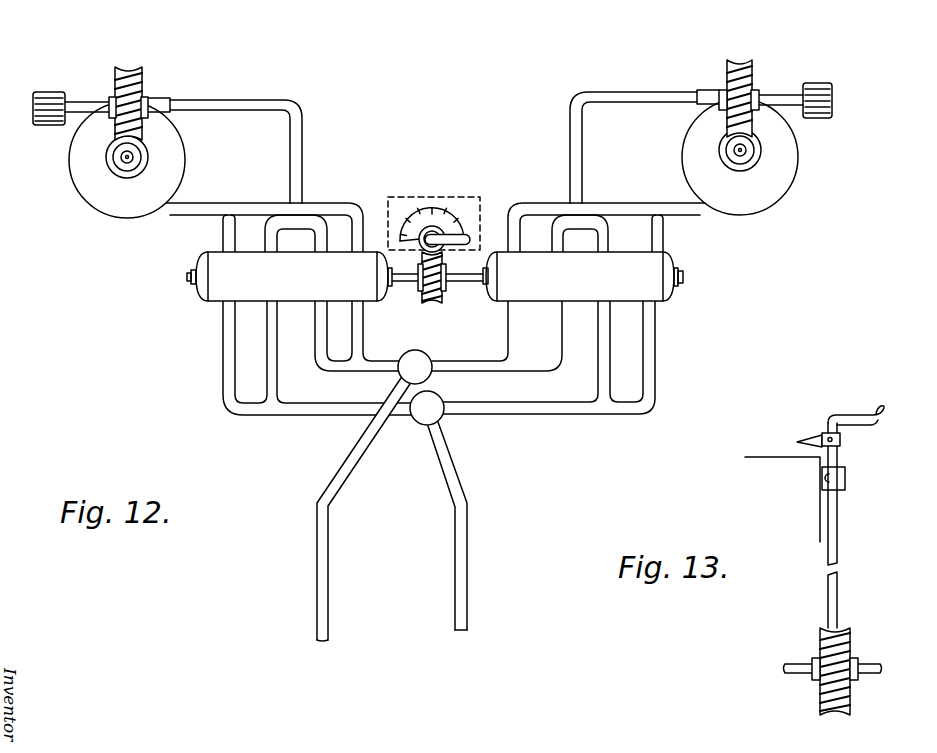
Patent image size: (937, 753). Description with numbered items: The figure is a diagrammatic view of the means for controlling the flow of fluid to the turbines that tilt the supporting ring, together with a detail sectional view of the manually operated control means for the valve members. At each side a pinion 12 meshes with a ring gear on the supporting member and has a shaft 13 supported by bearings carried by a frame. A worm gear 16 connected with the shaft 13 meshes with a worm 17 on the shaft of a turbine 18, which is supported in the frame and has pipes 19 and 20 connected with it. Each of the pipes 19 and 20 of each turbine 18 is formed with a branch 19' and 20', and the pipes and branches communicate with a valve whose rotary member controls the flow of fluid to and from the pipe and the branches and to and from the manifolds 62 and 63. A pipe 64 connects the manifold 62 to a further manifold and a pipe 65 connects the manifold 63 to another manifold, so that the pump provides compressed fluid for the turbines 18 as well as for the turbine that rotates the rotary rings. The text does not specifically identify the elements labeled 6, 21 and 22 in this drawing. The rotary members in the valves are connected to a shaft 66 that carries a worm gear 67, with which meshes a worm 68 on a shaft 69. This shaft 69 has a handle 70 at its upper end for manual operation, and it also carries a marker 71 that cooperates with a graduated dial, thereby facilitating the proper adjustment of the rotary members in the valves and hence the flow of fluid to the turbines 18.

In FIG. 12, the cylinder 6 is at (655, 288).
In FIG. 12, the pinion 12 is at (43, 105).
In FIG. 12, the shaft 13 is at (80, 105).
In FIG. 12, the worm gear 16 is at (140, 72).
In FIG. 12, the worm 17 is at (743, 163).
In FIG. 12, the turbine 18 is at (177, 158).
In FIG. 12, the pipe 19 is at (433, 147).
In FIG. 12, the branch 19' is at (452, 233).
In FIG. 12, the pipe 20 is at (435, 271).
In FIG. 12, the branch 20' is at (677, 233).
In FIG. 12, the return conduit 21 is at (650, 410).
In FIG. 12, the indicator dial 22 is at (435, 208).
In FIG. 12, the manifold 62 is at (441, 401).
In FIG. 12, the manifold 63 is at (421, 308).
In FIG. 12, the pipe 64 is at (468, 592).
In FIG. 12, the pipe 65 is at (318, 586).
In FIG. 12, the shaft 66 is at (476, 280).
In FIG. 12, the worm gear 67 is at (420, 294).
In FIG. 13, the worm gear 67 is at (851, 637).
In FIG. 13, the worm 68 is at (822, 685).
In FIG. 13, the shaft 69 is at (838, 592).
In FIG. 12, the handle 70 is at (462, 235).
In FIG. 13, the handle 70 is at (863, 421).
In FIG. 13, the marker 71 is at (815, 433).